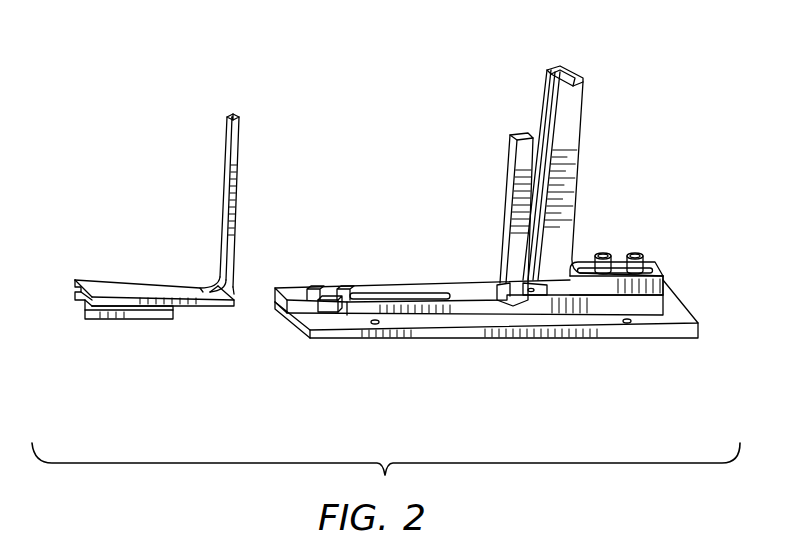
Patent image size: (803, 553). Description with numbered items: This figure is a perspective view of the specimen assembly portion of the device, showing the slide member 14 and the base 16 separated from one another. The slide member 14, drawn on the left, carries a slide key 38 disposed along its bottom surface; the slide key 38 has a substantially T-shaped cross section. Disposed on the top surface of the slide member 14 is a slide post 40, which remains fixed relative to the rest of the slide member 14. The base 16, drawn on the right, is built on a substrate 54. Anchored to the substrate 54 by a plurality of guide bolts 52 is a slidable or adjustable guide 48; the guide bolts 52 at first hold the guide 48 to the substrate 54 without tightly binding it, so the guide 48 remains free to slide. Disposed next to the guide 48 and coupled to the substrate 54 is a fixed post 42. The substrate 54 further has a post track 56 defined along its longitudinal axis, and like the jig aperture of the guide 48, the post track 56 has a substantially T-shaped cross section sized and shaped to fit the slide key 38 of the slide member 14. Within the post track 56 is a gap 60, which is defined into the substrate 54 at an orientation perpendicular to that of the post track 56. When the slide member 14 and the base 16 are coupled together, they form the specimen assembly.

The slide member 14 is at (112, 158).
The base 16 is at (705, 171).
The slide key 38 is at (112, 313).
The slide post 40 is at (236, 141).
The fixed post 42 is at (522, 150).
The guide 48 is at (580, 93).
The guide bolts 52 is at (630, 257).
The substrate 54 is at (558, 323).
The post track 56 is at (352, 302).
The gap 60 is at (343, 309).